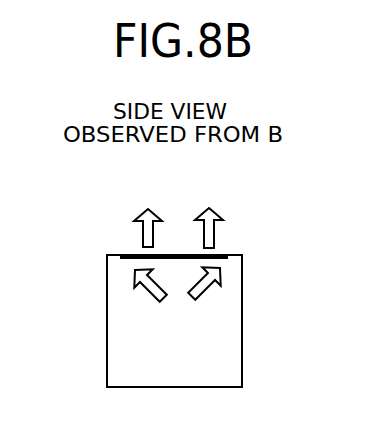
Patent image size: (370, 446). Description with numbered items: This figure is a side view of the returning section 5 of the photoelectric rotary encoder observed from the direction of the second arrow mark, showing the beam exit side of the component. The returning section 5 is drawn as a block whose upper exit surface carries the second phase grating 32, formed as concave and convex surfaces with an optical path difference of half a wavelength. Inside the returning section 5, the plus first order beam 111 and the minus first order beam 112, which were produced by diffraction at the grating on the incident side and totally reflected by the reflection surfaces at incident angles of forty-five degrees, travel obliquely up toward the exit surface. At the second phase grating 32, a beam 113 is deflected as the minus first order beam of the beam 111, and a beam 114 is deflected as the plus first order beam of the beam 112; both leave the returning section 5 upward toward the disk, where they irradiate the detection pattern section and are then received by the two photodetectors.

The returning section 5 is at (122, 335).
The second phase grating 32 is at (175, 253).
The plus first order beam 111 is at (134, 278).
The minus first order beam 112 is at (218, 275).
The minus first order beam of beam 111 113 is at (145, 229).
The plus first order beam of beam 112 114 is at (217, 229).